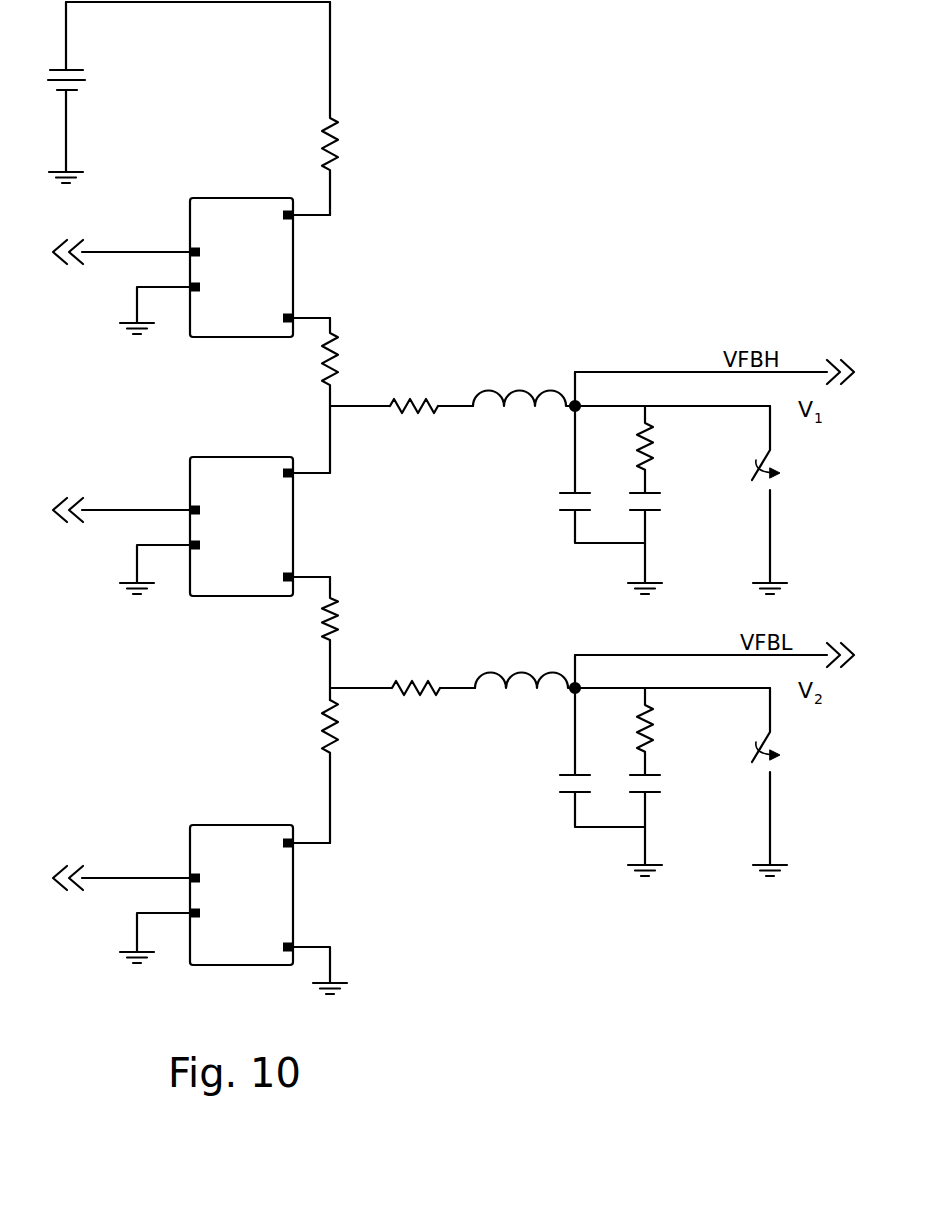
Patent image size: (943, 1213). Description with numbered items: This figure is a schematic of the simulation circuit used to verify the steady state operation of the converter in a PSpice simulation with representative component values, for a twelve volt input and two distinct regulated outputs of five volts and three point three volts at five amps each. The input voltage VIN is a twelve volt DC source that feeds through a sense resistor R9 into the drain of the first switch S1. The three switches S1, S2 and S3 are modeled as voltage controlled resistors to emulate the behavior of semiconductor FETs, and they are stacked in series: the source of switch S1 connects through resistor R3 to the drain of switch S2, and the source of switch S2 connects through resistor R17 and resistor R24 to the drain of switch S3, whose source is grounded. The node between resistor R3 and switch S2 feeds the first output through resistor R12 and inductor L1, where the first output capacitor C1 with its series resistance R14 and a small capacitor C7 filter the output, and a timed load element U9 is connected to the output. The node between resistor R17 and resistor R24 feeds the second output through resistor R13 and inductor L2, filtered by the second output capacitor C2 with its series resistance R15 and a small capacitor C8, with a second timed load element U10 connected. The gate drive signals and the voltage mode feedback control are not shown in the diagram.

The input voltage VIN is at (119, 92).
The current sense resistor 0.1m R9 is at (364, 108).
The switch S1 is at (193, 267).
The resistor 1m R3 is at (352, 394).
The resistor 0.75m R12 is at (401, 406).
The inductor 4.7uH L1 is at (524, 403).
The resistor 25m (ESR) R14 is at (678, 449).
The capacitor 0.1uF C7 is at (561, 457).
The capacitor 150uF C1 is at (685, 540).
The timed load switch 800us U9 is at (806, 500).
The switch S2 is at (193, 526).
The resistor 0.1m R17 is at (366, 635).
The resistor 0.1m R24 is at (292, 771).
The resistor 0.75m R13 is at (402, 689).
The inductor 4.7uH L2 is at (525, 683).
The resistor 25m (ESR) R15 is at (677, 731).
The capacitor 0.1uF C8 is at (561, 741).
The capacitor 150uF C2 is at (685, 821).
The timed load switch 1.5 ms U10 is at (809, 782).
The switch S3 is at (200, 909).